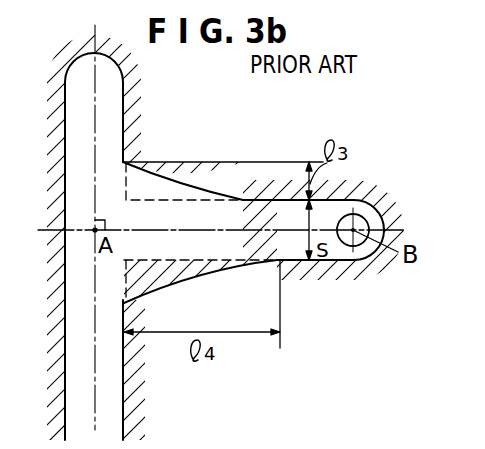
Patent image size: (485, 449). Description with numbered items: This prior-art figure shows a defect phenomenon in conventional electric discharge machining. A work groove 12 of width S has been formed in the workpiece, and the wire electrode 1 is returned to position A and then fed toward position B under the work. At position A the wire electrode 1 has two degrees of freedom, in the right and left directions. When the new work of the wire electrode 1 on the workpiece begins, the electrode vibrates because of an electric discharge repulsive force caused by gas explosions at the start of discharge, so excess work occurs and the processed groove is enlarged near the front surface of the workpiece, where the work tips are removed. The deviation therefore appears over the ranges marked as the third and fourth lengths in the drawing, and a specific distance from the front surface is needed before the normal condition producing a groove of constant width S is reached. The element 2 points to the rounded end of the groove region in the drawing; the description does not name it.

The work groove 12 is at (62, 317).
The runner channel 2 is at (366, 199).
The wire electrode 1 is at (345, 237).